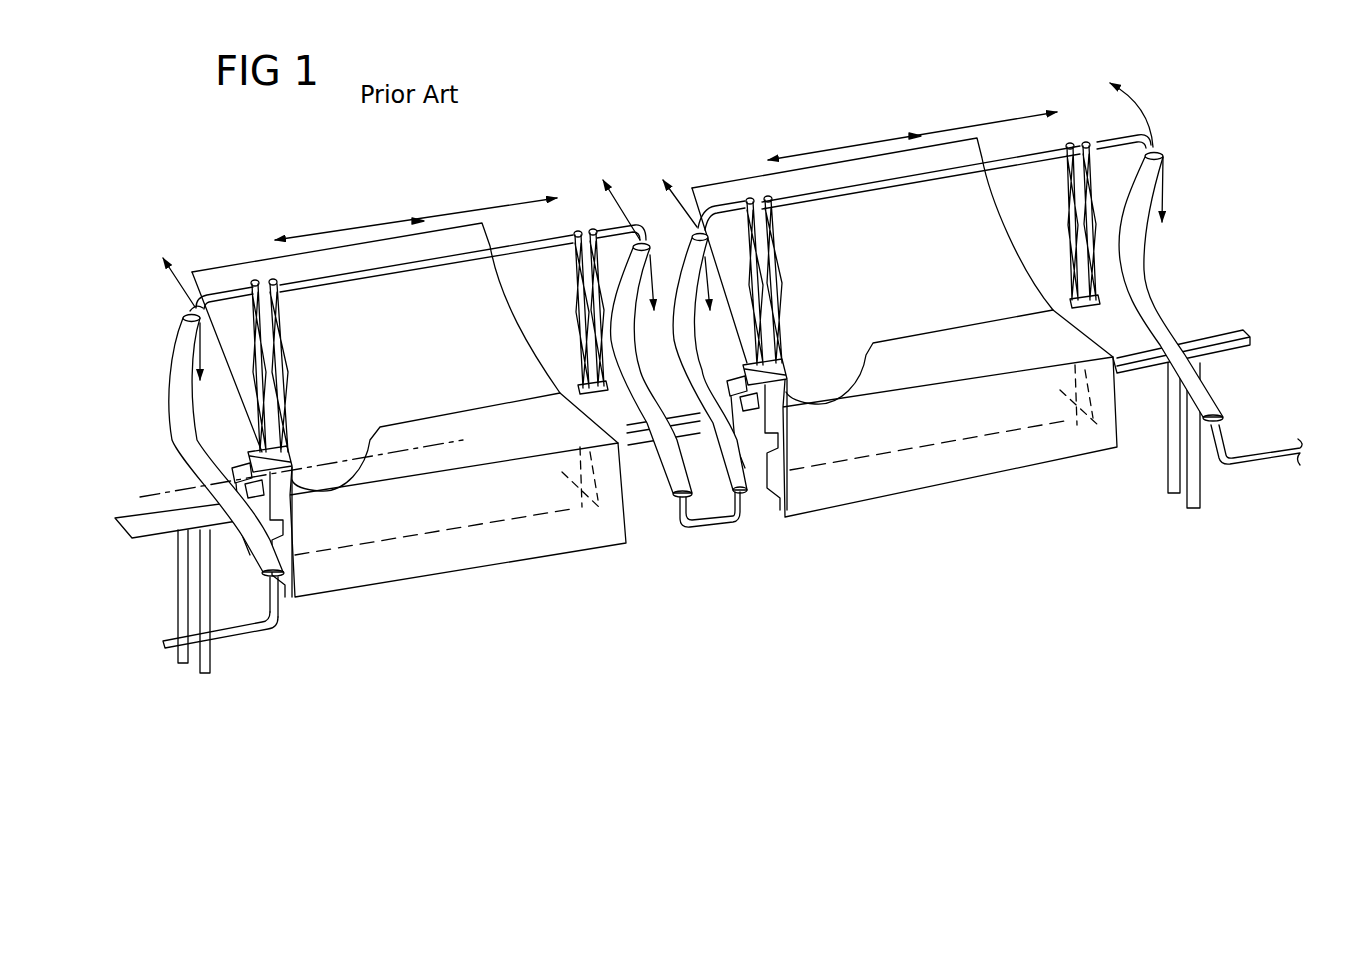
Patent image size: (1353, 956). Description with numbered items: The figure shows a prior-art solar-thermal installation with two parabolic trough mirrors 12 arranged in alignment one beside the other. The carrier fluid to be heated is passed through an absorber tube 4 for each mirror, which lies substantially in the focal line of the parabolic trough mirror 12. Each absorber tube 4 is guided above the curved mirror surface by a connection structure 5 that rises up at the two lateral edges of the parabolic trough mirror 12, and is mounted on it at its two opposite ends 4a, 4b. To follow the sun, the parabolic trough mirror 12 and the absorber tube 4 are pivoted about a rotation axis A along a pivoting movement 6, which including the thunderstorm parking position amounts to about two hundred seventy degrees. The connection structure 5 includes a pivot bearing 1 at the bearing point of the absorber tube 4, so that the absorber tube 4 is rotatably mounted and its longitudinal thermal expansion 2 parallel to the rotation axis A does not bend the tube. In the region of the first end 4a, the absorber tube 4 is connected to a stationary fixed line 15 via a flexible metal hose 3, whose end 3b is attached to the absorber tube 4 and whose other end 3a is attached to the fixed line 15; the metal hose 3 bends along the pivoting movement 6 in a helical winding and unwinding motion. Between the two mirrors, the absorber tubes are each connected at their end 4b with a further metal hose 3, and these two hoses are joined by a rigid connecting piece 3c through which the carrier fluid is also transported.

The pivot bearing 1 is at (283, 295).
The longitudinal thermal expansion 2 is at (666, 166).
The flexible metal hose 3 is at (177, 418).
The hose end connected to fixed line 3a is at (280, 600).
The hose end connected to absorber tube 3b is at (198, 290).
The rigid connecting piece 3c is at (708, 525).
The absorber tube 4 is at (410, 265).
The first end of absorber tube 4a is at (237, 287).
The second end of absorber tube 4b is at (643, 237).
The connection structure 5 is at (287, 375).
The pivoting movement 6 is at (190, 303).
The parabolic trough mirror 12 is at (396, 375).
The fixed line 15 is at (238, 628).
The rotation axis A is at (153, 490).